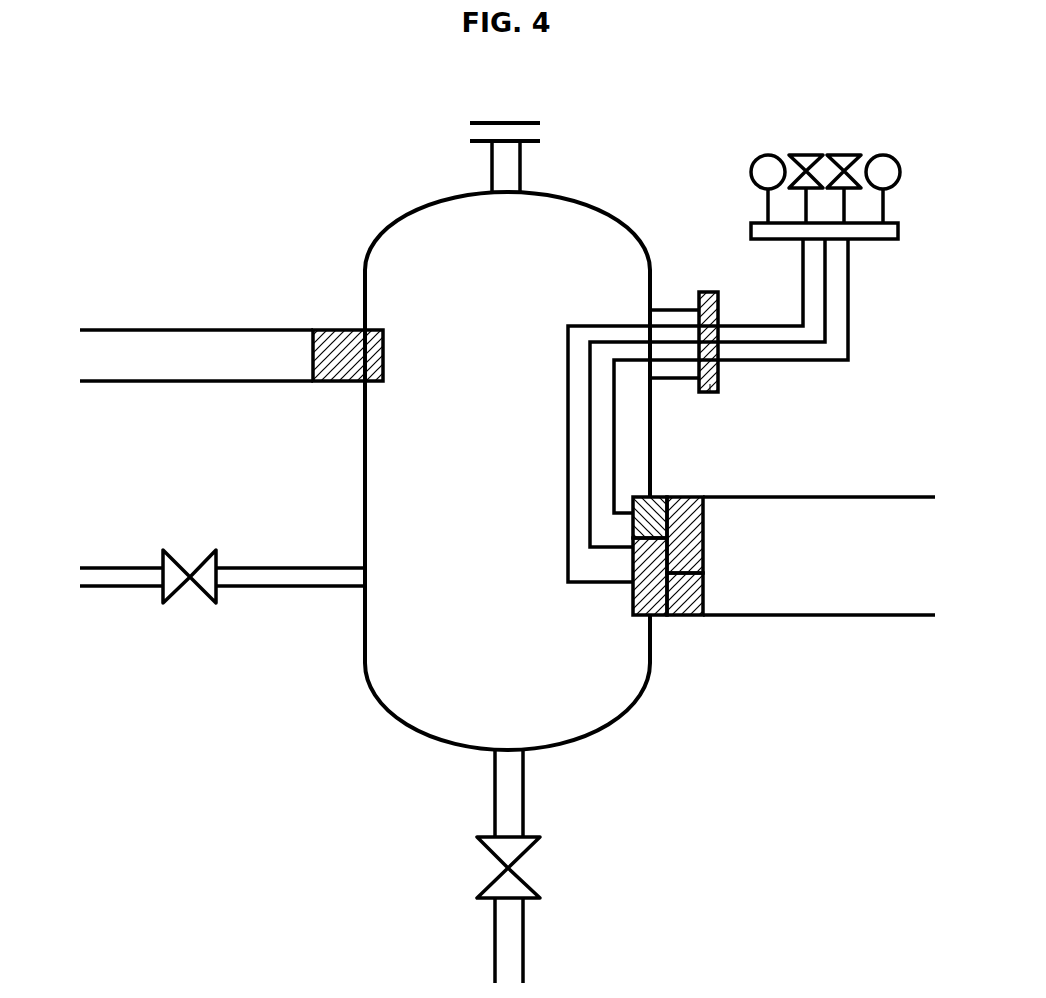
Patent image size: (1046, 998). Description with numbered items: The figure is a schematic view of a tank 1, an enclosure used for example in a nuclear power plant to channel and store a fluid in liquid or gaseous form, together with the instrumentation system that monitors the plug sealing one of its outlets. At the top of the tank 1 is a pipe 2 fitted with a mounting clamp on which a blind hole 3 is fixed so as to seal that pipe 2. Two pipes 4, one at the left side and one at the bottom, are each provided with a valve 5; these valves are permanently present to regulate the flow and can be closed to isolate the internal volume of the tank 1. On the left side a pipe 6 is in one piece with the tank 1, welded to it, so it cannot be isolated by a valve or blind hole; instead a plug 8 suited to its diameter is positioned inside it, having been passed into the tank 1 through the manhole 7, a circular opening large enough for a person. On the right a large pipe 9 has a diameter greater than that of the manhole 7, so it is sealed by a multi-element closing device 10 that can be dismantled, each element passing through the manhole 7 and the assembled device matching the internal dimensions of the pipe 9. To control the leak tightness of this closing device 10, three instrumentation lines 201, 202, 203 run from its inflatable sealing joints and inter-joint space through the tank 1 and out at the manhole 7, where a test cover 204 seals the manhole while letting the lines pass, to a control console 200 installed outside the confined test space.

The tank 1 is at (560, 240).
The pipe 2 is at (508, 163).
The blind hole 3 is at (507, 122).
The pipes 4 is at (276, 575).
The valves 5 is at (205, 570).
The pipe 6 is at (178, 347).
The manhole 7 is at (678, 312).
The plug 8 is at (336, 345).
The pipe 9 is at (820, 515).
The multi-element closing device 10 is at (666, 624).
The control console 200 is at (872, 236).
The instrumentation line 201 is at (580, 326).
The instrumentation line 202 is at (608, 342).
The instrumentation line 203 is at (632, 362).
The test cover 204 is at (710, 384).